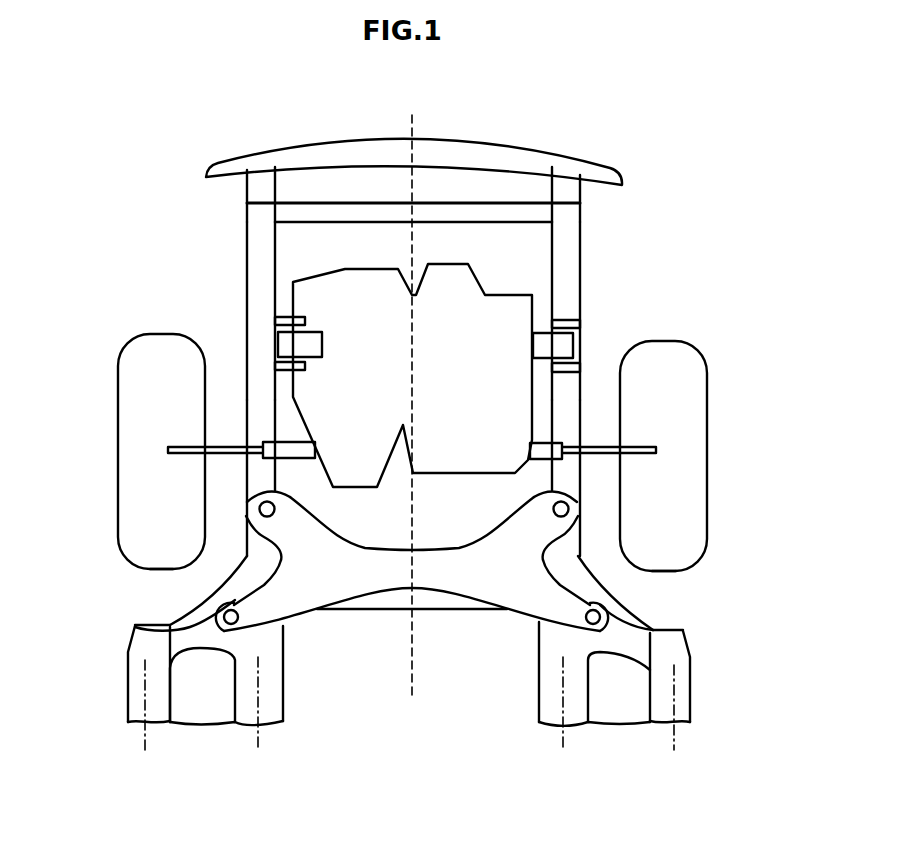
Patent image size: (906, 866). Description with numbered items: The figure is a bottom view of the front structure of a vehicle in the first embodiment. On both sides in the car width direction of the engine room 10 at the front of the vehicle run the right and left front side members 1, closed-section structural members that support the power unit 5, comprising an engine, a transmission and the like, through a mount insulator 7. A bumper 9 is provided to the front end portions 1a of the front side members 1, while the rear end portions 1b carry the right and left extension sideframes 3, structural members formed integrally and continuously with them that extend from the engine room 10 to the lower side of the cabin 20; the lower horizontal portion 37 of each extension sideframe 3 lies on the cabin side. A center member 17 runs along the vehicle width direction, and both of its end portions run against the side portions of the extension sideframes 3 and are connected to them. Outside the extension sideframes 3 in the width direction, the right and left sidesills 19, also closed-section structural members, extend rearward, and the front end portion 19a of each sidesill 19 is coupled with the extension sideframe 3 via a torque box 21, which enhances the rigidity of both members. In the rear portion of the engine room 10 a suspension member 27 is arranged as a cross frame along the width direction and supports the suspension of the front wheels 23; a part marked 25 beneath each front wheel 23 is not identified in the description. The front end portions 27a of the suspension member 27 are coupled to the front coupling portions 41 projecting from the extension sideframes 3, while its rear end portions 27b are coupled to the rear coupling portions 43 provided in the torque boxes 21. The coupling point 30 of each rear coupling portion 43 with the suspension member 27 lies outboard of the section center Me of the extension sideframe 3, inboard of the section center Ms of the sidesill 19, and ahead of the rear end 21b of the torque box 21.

The front side member 1 is at (247, 240).
The front end portion 1a is at (264, 168).
The rear end portion 1b is at (247, 414).
The extension sideframe 3 is at (248, 562).
The power unit 5 is at (509, 295).
The mount insulator 7 is at (278, 343).
The bumper 9 is at (505, 142).
The engine room 10 is at (356, 262).
The center member 17 is at (440, 603).
The sidesill 19 is at (128, 704).
The front end portion 19a is at (135, 624).
The cabin 20 is at (358, 718).
The torque box 21 is at (191, 641).
The rear end 21b is at (128, 656).
The front wheel 23 is at (118, 405).
The tire 25 is at (138, 606).
The suspension member 27 is at (380, 583).
The front end portion 27a is at (253, 497).
The rear end portion 27b is at (220, 633).
The coupling point 30 is at (240, 616).
The lower horizontal portion 37 is at (284, 708).
The front coupling portion 41 is at (259, 510).
The rear coupling portion 43 is at (135, 627).
The center of section of the sidesill Ms is at (147, 752).
The center of section of the extension sideframe Me is at (258, 752).